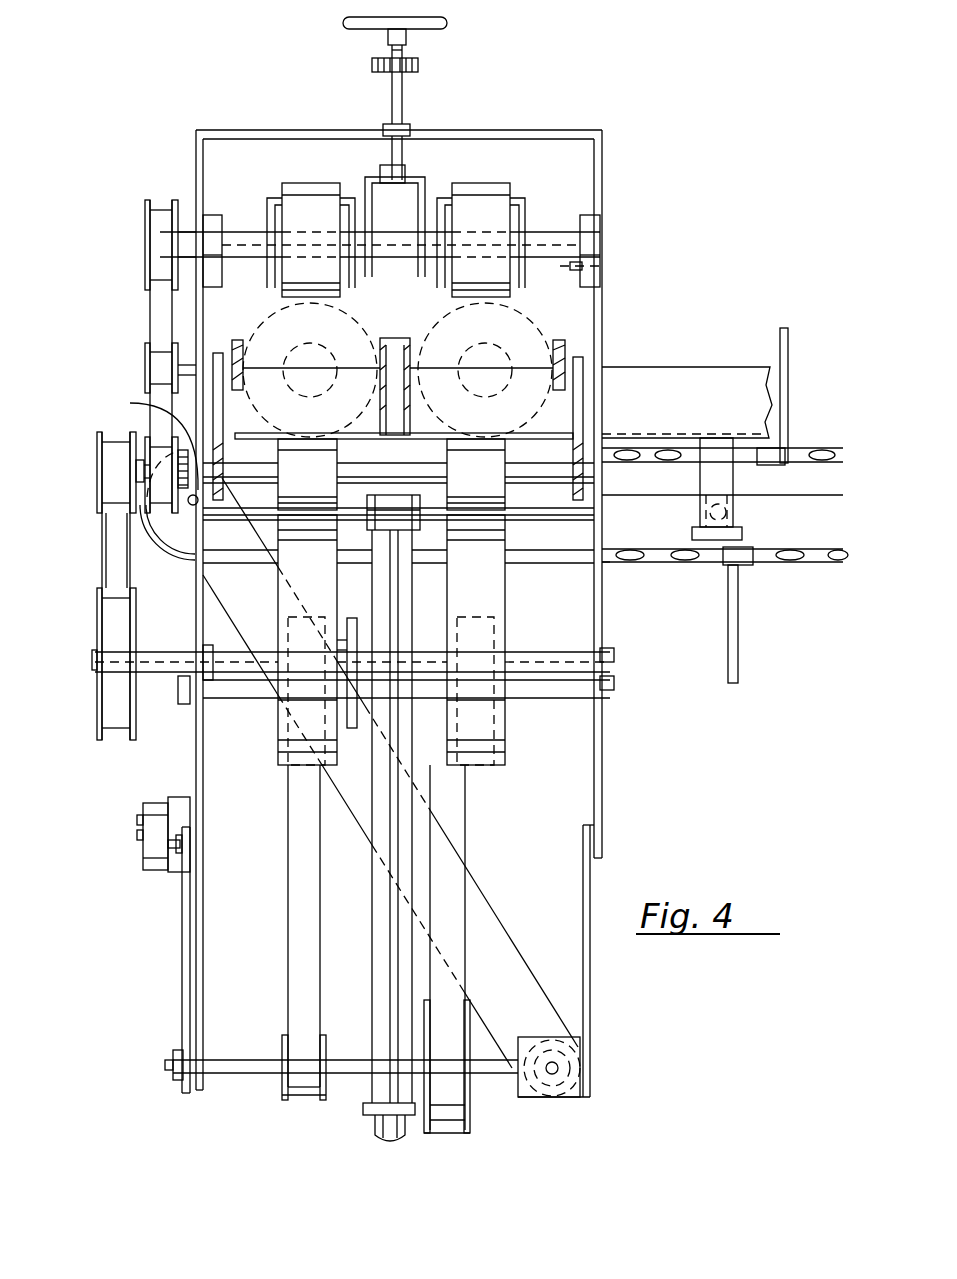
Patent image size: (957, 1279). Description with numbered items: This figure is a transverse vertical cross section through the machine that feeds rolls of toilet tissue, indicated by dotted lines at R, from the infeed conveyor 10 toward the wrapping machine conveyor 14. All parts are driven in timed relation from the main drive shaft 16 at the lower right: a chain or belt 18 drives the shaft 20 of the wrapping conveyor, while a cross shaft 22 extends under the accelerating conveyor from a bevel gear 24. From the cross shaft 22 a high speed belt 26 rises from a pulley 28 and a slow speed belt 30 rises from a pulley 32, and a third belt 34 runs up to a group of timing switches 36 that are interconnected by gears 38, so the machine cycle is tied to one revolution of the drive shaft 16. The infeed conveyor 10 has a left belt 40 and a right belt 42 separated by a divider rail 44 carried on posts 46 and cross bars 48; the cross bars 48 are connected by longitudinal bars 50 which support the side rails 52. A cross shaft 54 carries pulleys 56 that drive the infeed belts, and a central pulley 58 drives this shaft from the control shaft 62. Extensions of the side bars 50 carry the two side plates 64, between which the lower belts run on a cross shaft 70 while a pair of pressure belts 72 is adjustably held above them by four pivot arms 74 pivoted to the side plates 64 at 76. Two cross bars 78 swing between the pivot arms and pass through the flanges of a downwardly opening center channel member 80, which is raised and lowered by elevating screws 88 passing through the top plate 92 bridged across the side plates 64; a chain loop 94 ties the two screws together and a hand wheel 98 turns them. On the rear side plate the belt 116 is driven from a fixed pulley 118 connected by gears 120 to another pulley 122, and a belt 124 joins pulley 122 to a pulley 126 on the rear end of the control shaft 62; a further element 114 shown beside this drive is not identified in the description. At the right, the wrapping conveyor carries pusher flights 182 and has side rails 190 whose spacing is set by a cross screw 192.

The infeed conveyor 10 is at (616, 578).
The wrapping machine conveyor 14 is at (762, 325).
The main drive shaft 16 is at (560, 1075).
The chain or belt 18 is at (488, 918).
The shaft of the wrapping conveyor 20 is at (172, 540).
The cross shaft 22 is at (236, 1068).
The bevel gear 24 is at (553, 1097).
The high speed belt 26 is at (458, 843).
The pulley 28 is at (470, 1115).
The slow speed belt 30 is at (300, 870).
The pulley 32 is at (326, 1040).
The third belt 34 is at (182, 960).
The timing switches 36 is at (140, 818).
The gears 38 is at (172, 838).
The left belt 40 is at (312, 438).
The right belt 42 is at (480, 438).
The divider rail 44 is at (412, 395).
The posts 46 is at (390, 948).
The cross bars 48 is at (548, 510).
The longitudinal bars 50 is at (218, 445).
The side rails 52 is at (236, 340).
The cross shaft 54 is at (250, 700).
The pulleys 56 is at (280, 762).
The central pulley 58 is at (352, 735).
The control shaft 62 is at (158, 660).
The side plates 64 is at (203, 158).
The cross shaft 70 is at (136, 468).
The pressure belts 72 is at (310, 190).
The pivot arms 74 is at (214, 218).
The pivot 76 is at (572, 270).
The cross bars 78 is at (240, 242).
The center channel member 80 is at (415, 177).
The elevating screws 88 is at (402, 105).
The top plate 92 is at (528, 135).
The chain loop 94 is at (418, 66).
The hand wheel 98 is at (447, 25).
The pulley 114 is at (146, 262).
The belt 116 is at (158, 305).
The fixed pulley 118 is at (150, 510).
The gears 120 is at (140, 408).
The pulley 122 is at (100, 448).
The belt 124 is at (102, 555).
The pulley 126 is at (98, 598).
The pusher flights 182 is at (738, 672).
The side rails 190 is at (685, 385).
The cross screw 192 is at (735, 497).
The rolls of toilet tissue R is at (420, 312).